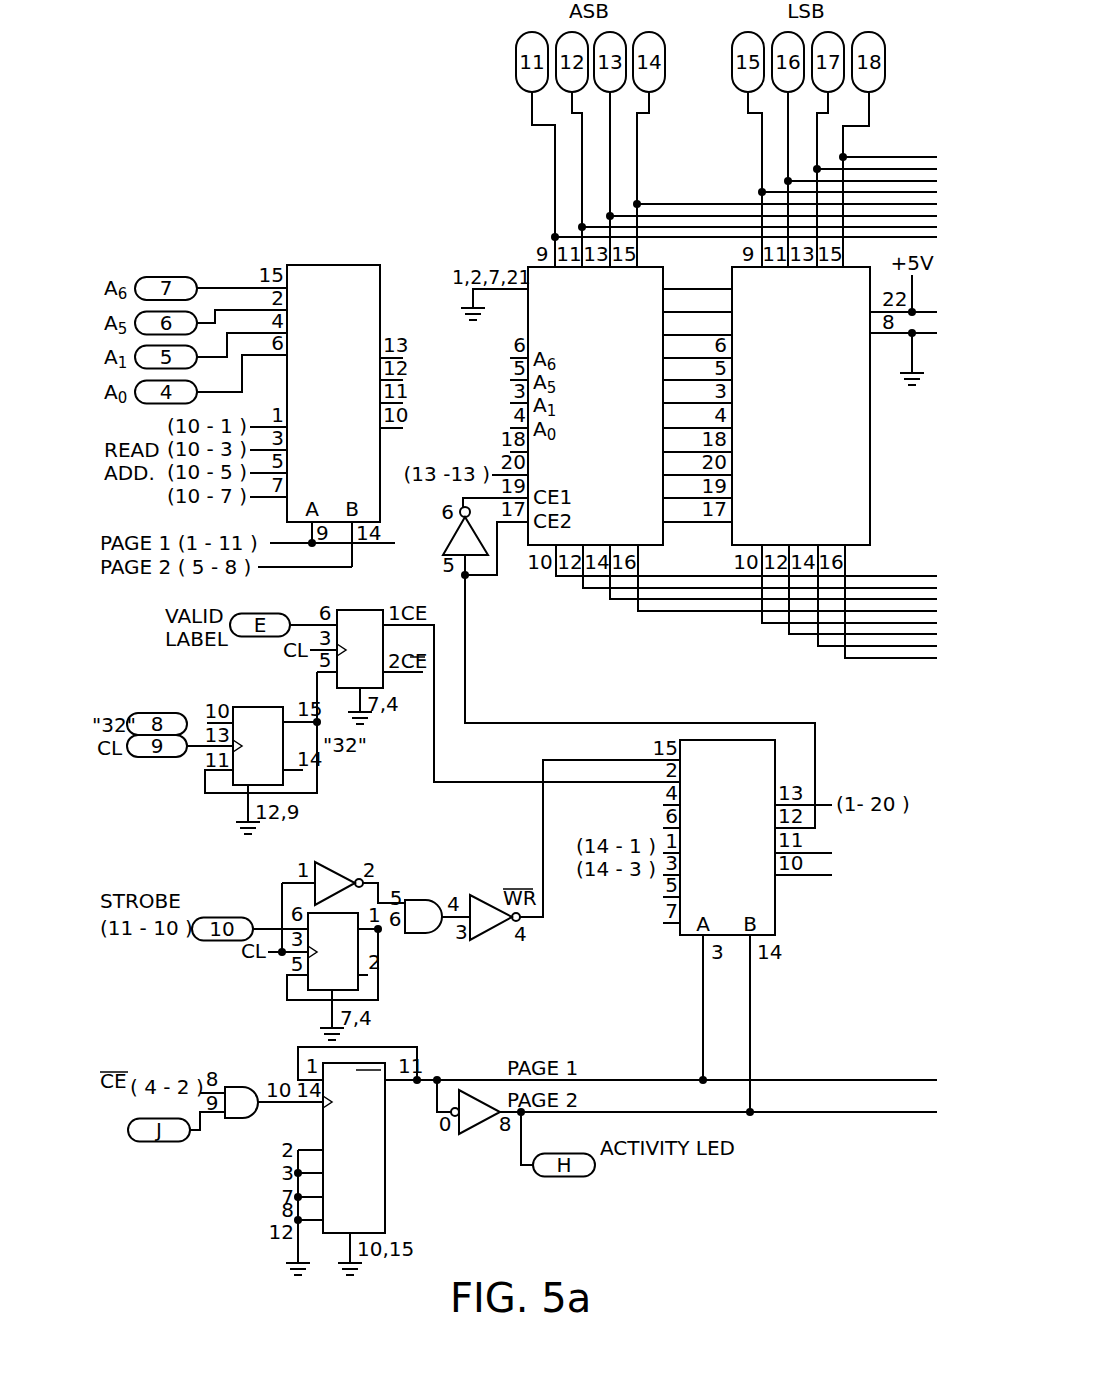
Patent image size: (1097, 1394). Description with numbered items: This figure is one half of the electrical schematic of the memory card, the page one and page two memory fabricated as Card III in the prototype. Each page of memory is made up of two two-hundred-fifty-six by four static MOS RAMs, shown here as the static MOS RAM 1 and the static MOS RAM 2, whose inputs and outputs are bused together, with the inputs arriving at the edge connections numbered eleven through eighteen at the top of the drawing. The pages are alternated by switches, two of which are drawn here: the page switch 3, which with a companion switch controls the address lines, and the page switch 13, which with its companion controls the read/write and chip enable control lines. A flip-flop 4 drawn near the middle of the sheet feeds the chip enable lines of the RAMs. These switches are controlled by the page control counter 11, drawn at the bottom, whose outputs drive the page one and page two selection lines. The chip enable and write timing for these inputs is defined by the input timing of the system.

The static MOS RAM 1 is at (595, 406).
The static MOS RAM 2 is at (801, 406).
The page switch IC- 3 is at (333, 393).
The JK flip-flop (chip enable) 4 is at (360, 649).
The page control counter IC- 11 is at (354, 1148).
The page switch IC- 13 is at (727, 837).